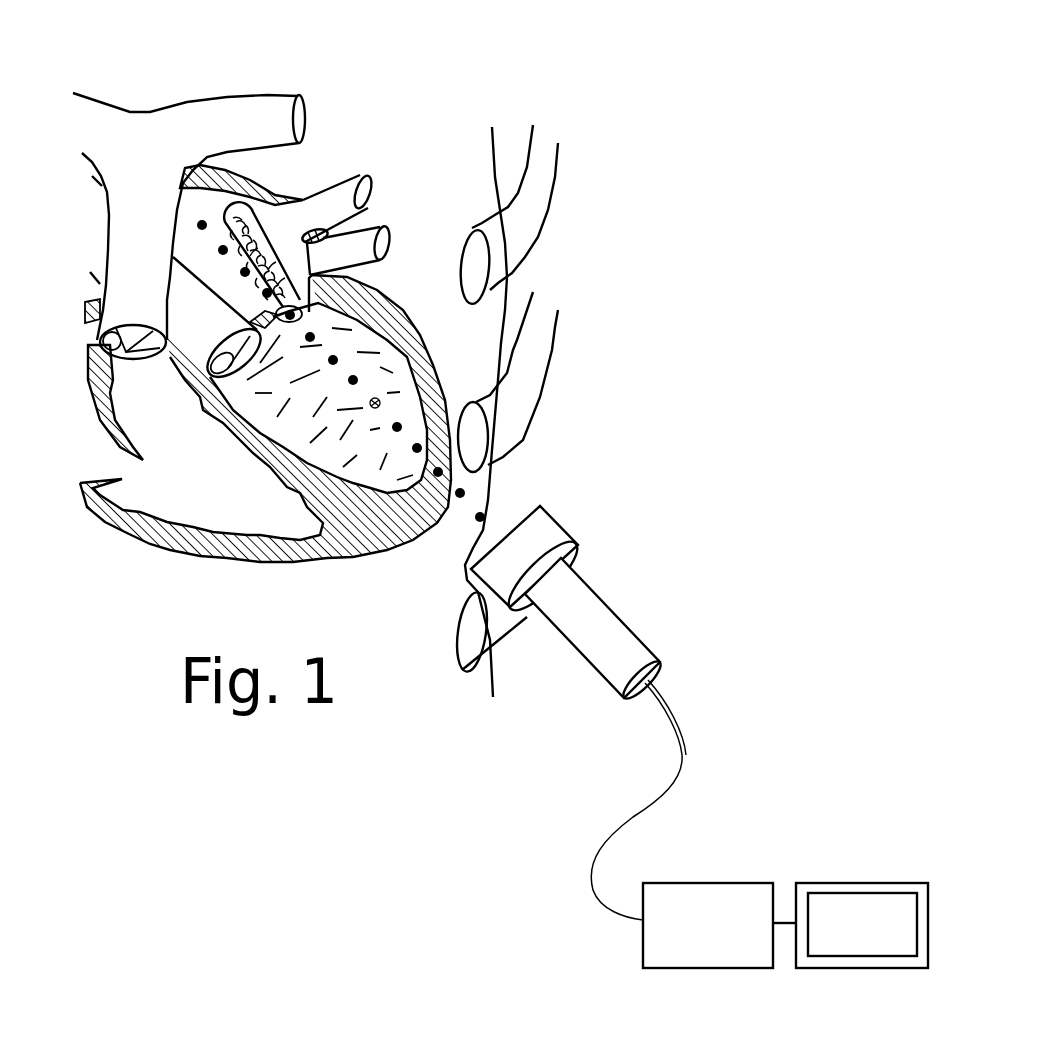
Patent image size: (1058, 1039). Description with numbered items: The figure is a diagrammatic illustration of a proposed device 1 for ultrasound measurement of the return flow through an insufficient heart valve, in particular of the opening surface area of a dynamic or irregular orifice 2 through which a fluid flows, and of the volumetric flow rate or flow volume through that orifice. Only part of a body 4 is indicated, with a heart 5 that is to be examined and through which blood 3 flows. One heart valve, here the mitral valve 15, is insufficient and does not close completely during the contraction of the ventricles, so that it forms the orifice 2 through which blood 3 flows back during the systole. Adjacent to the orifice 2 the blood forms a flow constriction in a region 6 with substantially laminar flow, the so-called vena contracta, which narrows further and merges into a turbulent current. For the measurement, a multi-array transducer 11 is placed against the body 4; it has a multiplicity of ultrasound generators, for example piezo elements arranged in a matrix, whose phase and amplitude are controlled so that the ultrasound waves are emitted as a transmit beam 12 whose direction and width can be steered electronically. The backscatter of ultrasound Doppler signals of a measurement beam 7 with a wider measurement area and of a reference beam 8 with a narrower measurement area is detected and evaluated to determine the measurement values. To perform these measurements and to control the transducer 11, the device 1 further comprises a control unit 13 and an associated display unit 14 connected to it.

The device 1 is at (715, 759).
The orifice 2 is at (272, 379).
The blood 3 is at (358, 337).
The body 4 is at (562, 388).
The heart 5 is at (190, 553).
The region 6 is at (250, 220).
The measurement beam 7 is at (380, 400).
The reference beam 8 is at (540, 308).
The transmit beam 12 is at (572, 365).
The multi-array transducer 11 is at (603, 618).
The control unit 13 is at (695, 908).
The display unit 14 is at (858, 918).
The mitral valve 15 is at (371, 205).